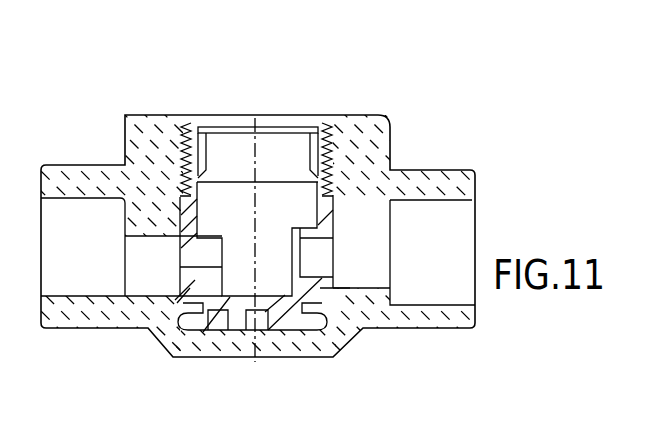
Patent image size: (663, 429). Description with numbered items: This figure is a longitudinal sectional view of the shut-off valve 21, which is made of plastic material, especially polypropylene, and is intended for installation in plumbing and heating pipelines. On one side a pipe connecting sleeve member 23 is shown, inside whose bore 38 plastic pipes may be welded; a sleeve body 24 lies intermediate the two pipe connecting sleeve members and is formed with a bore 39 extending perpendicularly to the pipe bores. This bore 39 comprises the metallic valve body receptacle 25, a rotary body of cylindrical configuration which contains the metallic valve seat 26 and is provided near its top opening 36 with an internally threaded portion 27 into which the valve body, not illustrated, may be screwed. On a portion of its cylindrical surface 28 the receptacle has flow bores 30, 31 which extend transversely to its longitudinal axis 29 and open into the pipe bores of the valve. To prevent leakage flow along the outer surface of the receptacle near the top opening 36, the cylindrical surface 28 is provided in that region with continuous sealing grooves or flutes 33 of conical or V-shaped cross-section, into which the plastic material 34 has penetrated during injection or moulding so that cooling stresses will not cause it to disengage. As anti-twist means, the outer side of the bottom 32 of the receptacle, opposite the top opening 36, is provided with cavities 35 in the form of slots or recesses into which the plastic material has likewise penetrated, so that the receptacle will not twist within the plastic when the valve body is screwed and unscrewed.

The shut-off valve 21 is at (354, 86).
The pipe connecting sleeve member 23 is at (59, 171).
The sleeve body 24 is at (134, 114).
The valve body receptacle 25 is at (302, 170).
The valve seat 26 is at (222, 237).
The internally threaded portion 27 is at (303, 140).
The cylindrical surface 28 is at (327, 262).
The longitudinal axis 29 is at (253, 366).
The flow bore 30 is at (190, 279).
The flow bore 31 is at (337, 286).
The bottom 32 is at (295, 318).
The sealing grooves or flutes 33 is at (335, 153).
The plastic material 34 is at (132, 143).
The cavities 35 is at (221, 326).
The top opening 36 is at (269, 134).
The bore 38 is at (52, 282).
The bore 39 is at (209, 116).